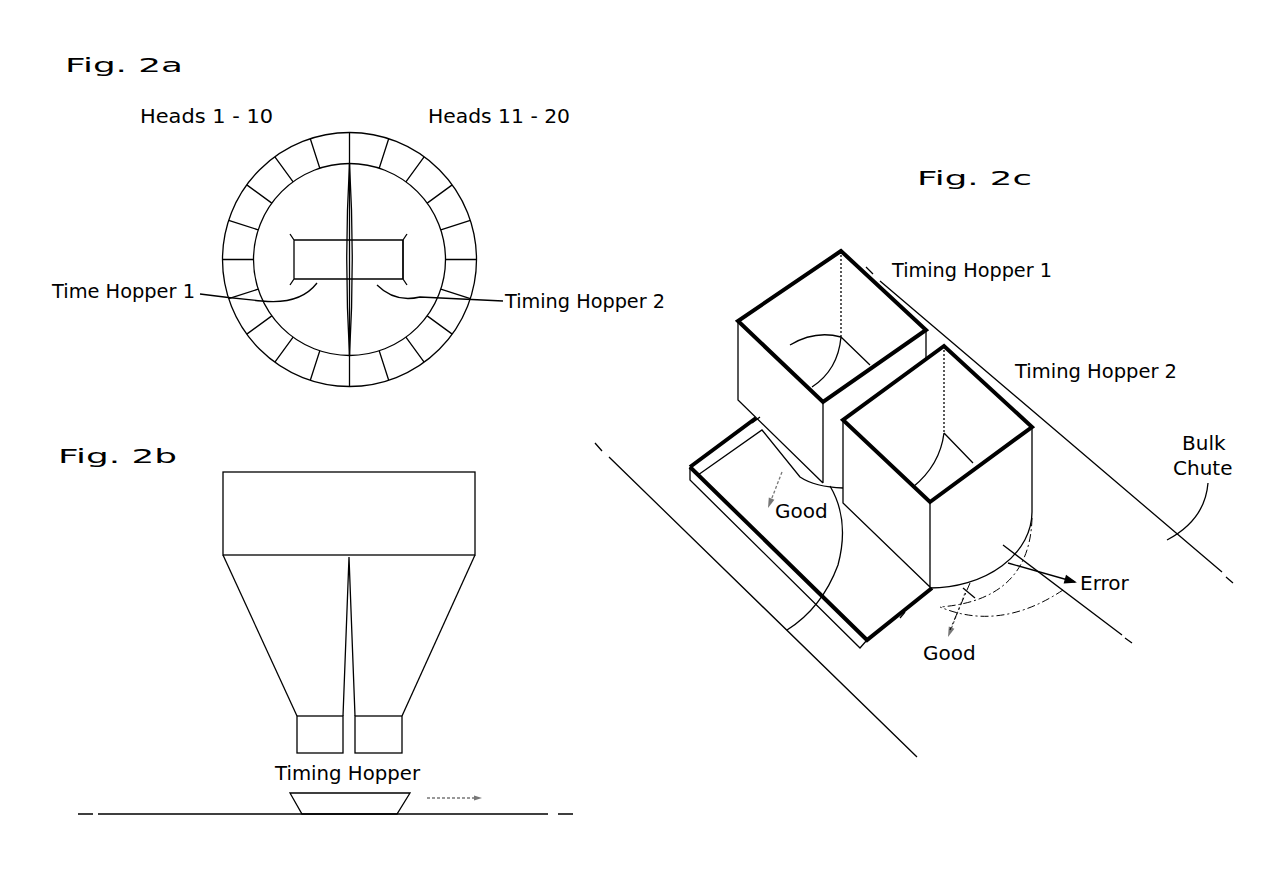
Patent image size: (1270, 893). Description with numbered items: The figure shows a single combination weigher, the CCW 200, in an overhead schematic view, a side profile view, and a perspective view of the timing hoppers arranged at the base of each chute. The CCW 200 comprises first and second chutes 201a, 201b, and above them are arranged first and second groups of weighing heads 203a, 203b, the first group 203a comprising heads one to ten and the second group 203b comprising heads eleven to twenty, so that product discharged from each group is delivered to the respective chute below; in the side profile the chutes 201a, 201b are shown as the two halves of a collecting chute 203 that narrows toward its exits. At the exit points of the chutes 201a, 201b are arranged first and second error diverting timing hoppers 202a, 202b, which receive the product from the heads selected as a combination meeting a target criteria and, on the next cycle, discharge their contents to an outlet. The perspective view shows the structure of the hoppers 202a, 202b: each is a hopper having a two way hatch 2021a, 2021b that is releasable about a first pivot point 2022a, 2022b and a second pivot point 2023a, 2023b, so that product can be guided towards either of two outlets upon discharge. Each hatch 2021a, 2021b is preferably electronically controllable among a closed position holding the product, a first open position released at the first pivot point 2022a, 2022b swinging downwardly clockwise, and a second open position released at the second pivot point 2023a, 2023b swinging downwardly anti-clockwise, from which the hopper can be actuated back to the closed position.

In FIG. 2a, the CCW 200 is at (505, 242).
In FIG. 2a, the first group of weighing heads 203a is at (262, 177).
In FIG. 2a, the second group of weighing heads 203b is at (462, 217).
In FIG. 2a, the first chute 201a is at (294, 256).
In FIG. 2b, the first chute 201a is at (288, 647).
In FIG. 2a, the second chute 201b is at (407, 317).
In FIG. 2b, the second chute 201b is at (410, 637).
In FIG. 2b, the first error diverting timing hopper 202a is at (310, 740).
In FIG. 2c, the first error diverting timing hopper 202a is at (783, 288).
In FIG. 2a, the second error diverting timing hopper 202b is at (403, 258).
In FIG. 2b, the second error diverting timing hopper 202b is at (388, 733).
In FIG. 2c, the second error diverting timing hopper 202b is at (977, 368).
In FIG. 2b, the collecting chute 203 is at (245, 518).
In FIG. 2c, the two way hatch 2021a is at (787, 630).
In FIG. 2c, the two way hatch 2021b is at (963, 588).
In FIG. 2c, the first pivot point 2022a is at (752, 423).
In FIG. 2c, the first pivot point 2022b is at (900, 618).
In FIG. 2c, the second pivot point 2023a is at (790, 345).
In FIG. 2c, the second pivot point 2023b is at (1033, 512).